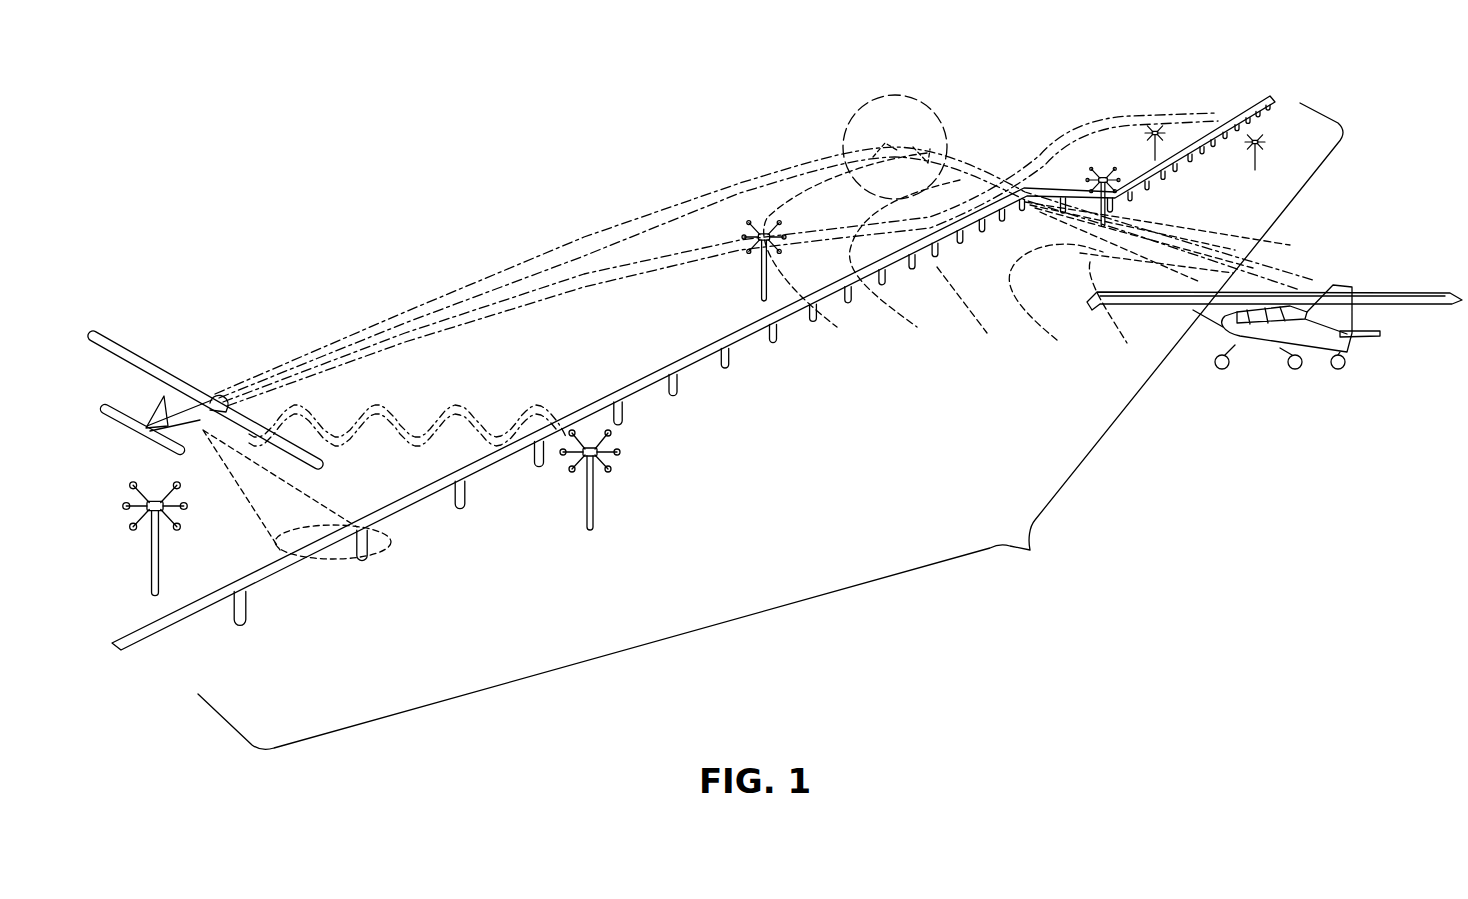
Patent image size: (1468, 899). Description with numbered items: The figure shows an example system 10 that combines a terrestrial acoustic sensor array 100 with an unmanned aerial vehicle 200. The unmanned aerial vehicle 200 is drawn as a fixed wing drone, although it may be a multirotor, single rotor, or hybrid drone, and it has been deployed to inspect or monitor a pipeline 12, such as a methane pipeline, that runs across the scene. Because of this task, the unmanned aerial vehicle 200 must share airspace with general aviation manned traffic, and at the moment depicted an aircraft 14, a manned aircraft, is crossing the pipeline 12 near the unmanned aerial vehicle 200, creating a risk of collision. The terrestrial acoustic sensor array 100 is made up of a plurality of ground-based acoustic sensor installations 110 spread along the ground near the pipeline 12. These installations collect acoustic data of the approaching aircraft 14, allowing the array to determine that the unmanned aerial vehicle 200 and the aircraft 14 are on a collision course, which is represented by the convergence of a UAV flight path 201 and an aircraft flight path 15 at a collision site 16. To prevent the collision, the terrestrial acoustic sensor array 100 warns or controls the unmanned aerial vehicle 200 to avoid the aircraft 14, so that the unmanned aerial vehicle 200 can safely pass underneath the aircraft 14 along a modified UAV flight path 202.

The system 10 is at (268, 171).
The pipeline 12 is at (712, 345).
The aircraft 14 is at (1340, 286).
The aircraft flight path 15 is at (1103, 252).
The collision site 16 is at (884, 93).
The terrestrial acoustic sensor array 100 is at (770, 426).
The ground-based acoustic sensor installation 110 is at (598, 492).
The unmanned aerial vehicle 200 is at (181, 396).
The UAV flight path 201 is at (615, 225).
The modified UAV flight path 202 is at (590, 290).